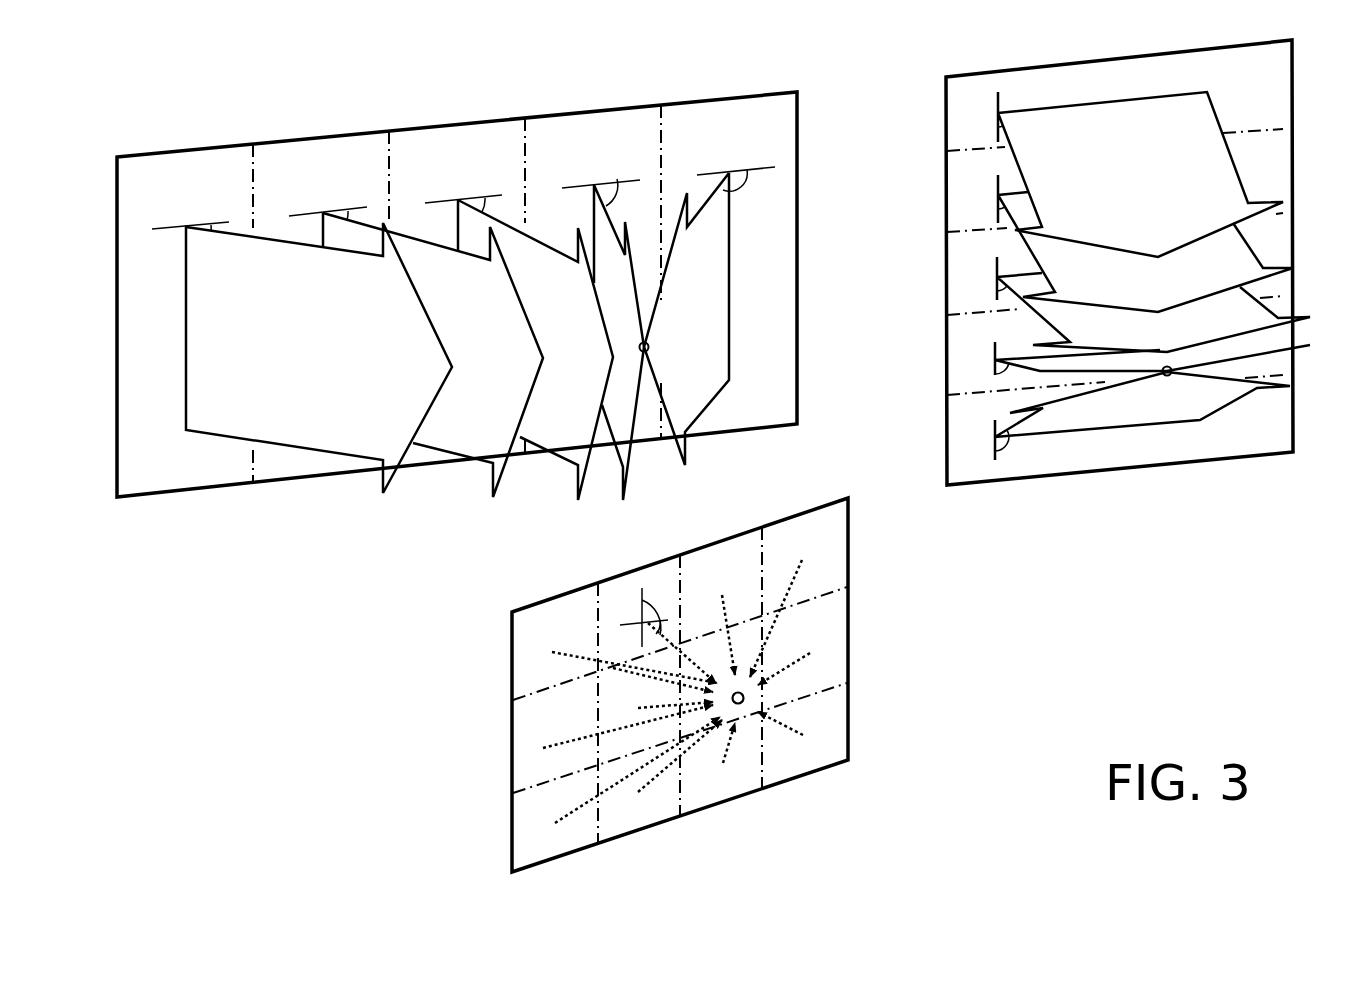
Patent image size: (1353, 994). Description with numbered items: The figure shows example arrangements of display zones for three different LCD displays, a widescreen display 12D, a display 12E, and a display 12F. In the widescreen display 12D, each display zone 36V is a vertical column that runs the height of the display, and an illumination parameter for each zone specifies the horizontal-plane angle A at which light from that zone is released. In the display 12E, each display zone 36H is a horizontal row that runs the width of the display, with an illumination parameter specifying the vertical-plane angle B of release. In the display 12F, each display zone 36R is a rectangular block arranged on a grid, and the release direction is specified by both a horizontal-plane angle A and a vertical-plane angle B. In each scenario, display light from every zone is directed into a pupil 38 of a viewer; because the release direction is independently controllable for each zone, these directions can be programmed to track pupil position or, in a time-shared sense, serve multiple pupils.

The widescreen display 12D is at (257, 105).
The display 12E is at (1207, 518).
The display 12F is at (432, 733).
The display zone 36V is at (712, 138).
The display zone 36H is at (1290, 248).
The display zone 36R is at (553, 856).
The pupil 38 is at (640, 350).